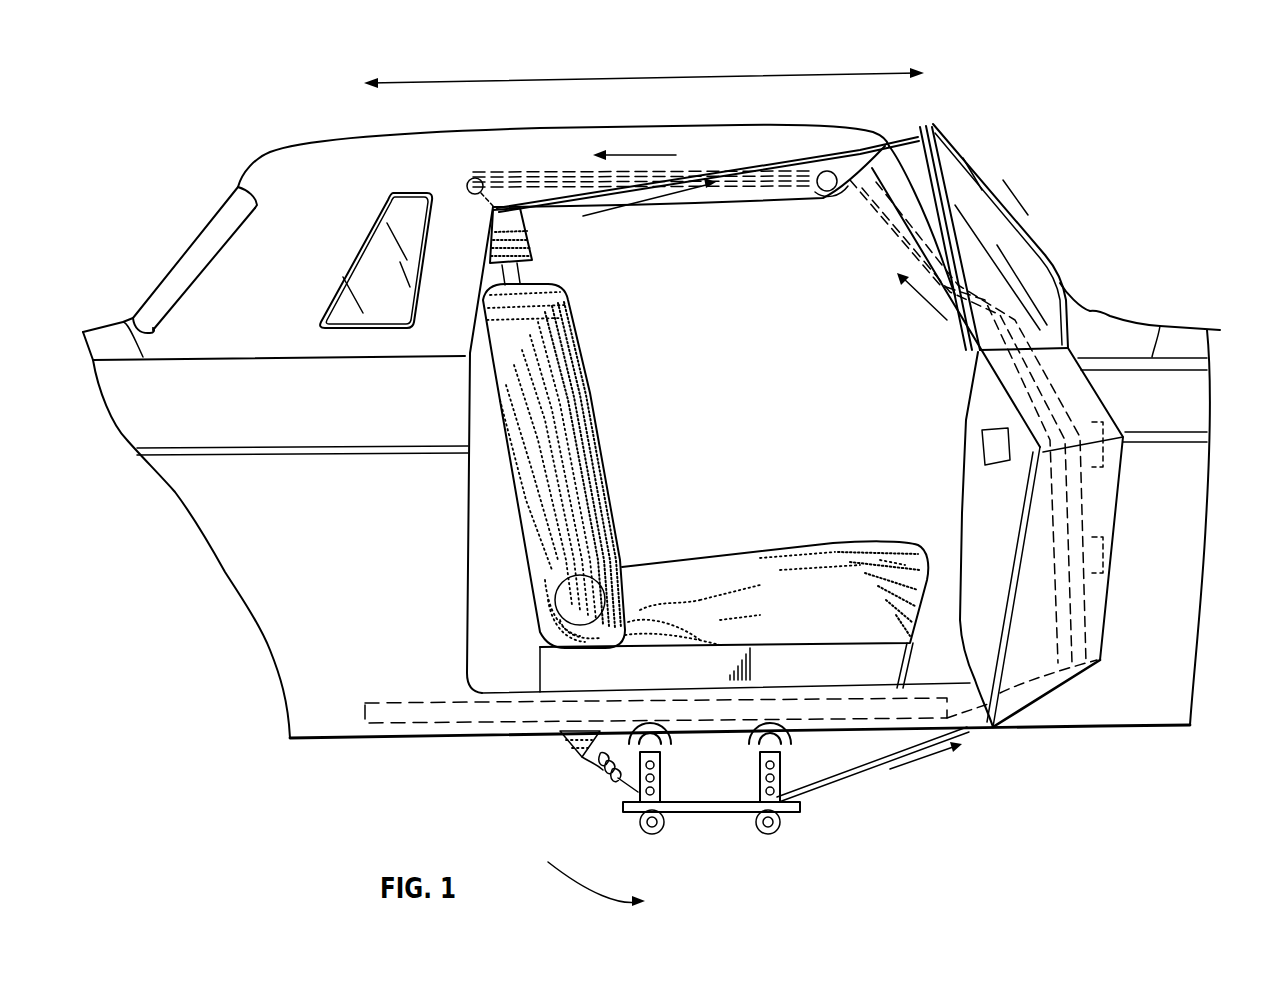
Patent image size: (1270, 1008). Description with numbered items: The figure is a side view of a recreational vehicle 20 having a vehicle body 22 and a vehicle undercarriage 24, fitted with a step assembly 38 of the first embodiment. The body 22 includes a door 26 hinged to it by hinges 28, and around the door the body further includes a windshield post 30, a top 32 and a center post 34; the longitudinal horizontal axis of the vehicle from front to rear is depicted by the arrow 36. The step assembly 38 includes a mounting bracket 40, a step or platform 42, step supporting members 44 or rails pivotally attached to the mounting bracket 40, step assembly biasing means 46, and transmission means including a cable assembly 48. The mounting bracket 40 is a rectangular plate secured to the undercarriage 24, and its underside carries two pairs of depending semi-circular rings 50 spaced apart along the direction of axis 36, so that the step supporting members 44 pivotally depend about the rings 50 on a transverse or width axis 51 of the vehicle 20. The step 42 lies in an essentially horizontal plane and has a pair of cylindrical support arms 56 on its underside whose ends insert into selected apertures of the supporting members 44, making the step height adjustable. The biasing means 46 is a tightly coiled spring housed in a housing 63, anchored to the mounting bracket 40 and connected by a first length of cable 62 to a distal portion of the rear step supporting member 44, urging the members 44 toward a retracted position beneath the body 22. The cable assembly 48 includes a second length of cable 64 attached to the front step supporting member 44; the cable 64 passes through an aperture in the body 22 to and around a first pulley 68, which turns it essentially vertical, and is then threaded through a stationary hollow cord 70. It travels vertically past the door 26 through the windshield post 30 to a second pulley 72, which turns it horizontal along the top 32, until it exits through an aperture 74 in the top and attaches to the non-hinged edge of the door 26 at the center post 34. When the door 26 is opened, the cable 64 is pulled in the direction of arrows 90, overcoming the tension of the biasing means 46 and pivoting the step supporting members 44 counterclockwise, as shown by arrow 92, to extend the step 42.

The recreational vehicle 20 is at (1103, 299).
The vehicle body 22 is at (1190, 404).
The vehicle undercarriage 24 is at (420, 722).
The door 26 is at (987, 403).
The hinges 28 is at (1108, 461).
The windshield post 30 is at (1002, 306).
The top 32 is at (763, 124).
The center post 34 is at (460, 316).
The longitudinal horizontal axis 36 is at (815, 74).
The step assembly 38 is at (938, 785).
The mounting bracket 40 is at (795, 718).
The step 42 is at (712, 815).
The step supporting members 44 is at (781, 769).
The step assembly biasing means 46 is at (560, 745).
The cable assembly 48 is at (746, 208).
The semi-circular rings 50 is at (745, 745).
The transverse axis 51 is at (652, 732).
The cylindrical support arms 56 is at (643, 832).
The first length of cable 62 is at (606, 783).
The housing 63 is at (588, 760).
The second length of cable 64 is at (832, 778).
The first pulley 68 is at (1095, 663).
The hollow cord 70 is at (1090, 527).
The second pulley 72 is at (821, 205).
The aperture 74 is at (467, 182).
The arrows 90 is at (648, 153).
The arrow 92 is at (560, 882).